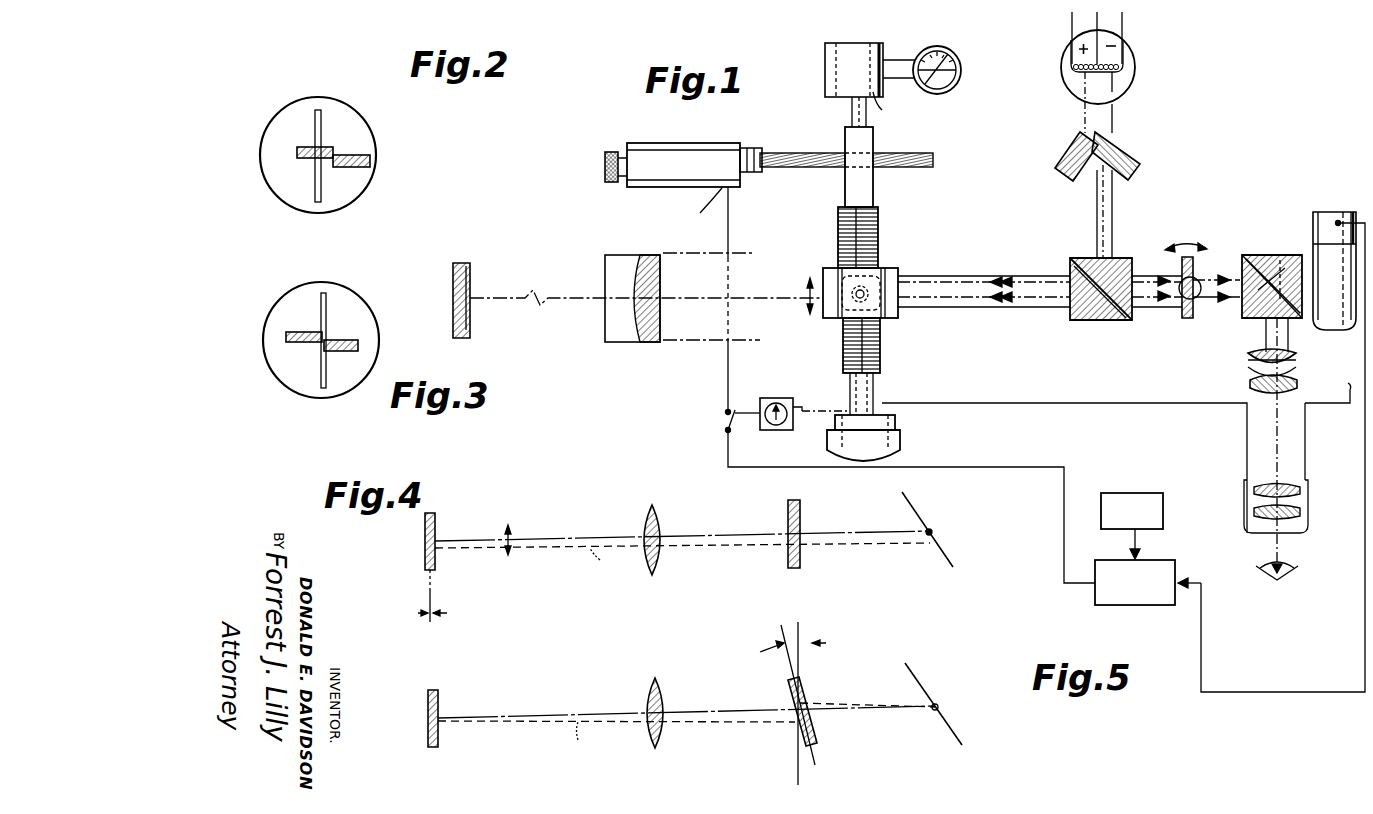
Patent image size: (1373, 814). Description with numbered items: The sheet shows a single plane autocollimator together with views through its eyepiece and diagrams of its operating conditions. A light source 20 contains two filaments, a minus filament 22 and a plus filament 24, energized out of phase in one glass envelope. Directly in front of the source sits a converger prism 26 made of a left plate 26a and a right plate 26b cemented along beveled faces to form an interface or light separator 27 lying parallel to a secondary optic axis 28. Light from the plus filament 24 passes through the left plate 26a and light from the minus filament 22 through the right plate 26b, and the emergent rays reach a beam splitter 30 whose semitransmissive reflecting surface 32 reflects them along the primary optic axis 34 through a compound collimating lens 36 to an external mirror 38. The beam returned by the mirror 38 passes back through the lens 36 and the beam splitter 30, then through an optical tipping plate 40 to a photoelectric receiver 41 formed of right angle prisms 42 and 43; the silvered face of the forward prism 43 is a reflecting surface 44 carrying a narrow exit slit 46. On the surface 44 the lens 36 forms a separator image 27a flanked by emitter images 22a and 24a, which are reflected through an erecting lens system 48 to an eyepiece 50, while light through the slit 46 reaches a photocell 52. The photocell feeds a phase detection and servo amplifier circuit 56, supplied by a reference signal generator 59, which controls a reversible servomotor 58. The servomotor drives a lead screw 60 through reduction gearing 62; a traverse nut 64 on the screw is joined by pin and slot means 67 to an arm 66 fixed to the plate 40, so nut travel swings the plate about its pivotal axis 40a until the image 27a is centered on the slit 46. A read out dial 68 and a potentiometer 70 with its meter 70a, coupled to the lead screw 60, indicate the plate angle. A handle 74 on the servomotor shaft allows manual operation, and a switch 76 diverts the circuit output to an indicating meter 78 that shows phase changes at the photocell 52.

In FIG. 1, the light source 20 is at (1136, 68).
In FIG. 1, the minus filament 22 is at (1124, 46).
In FIG. 1, the plus filament 24 is at (1068, 50).
In FIG. 1, the converger prism 26 is at (1111, 156).
In FIG. 1, the left plate 26a is at (1068, 160).
In FIG. 1, the right plate 26b is at (1140, 168).
In FIG. 1, the interface or light separator 27 is at (1080, 133).
In FIG. 2, the separator image 27a is at (330, 148).
In FIG. 3, the separator image 27a is at (332, 333).
In FIG. 4, the separator image 27a is at (940, 545).
In FIG. 5, the separator image 27a is at (938, 707).
In FIG. 1, the secondary optic axis 28 is at (1108, 212).
In FIG. 1, the beam splitter 30 is at (1108, 322).
In FIG. 1, the semitransmissive reflecting surface 32 is at (1075, 318).
In FIG. 1, the primary optic axis 34 is at (800, 300).
In FIG. 4, the primary optic axis 34 is at (590, 540).
In FIG. 5, the primary optic axis 34 is at (593, 715).
In FIG. 1, the compound collimating lens 36 is at (665, 342).
In FIG. 4, the compound collimating lens 36 is at (660, 512).
In FIG. 5, the compound collimating lens 36 is at (668, 730).
In FIG. 1, the mirror 38 is at (472, 275).
In FIG. 4, the mirror 38 is at (437, 518).
In FIG. 5, the mirror 38 is at (440, 692).
In FIG. 1, the optical tipping plate 40 is at (1185, 322).
In FIG. 4, the optical tipping plate 40 is at (801, 510).
In FIG. 5, the optical tipping plate 40 is at (818, 735).
In FIG. 1, the pivotal axis 40a is at (1190, 283).
In FIG. 1, the photoelectric receiver 41 is at (1279, 224).
In FIG. 1, the right angle prism 42 is at (1295, 247).
In FIG. 1, the forward right angle prism 43 is at (1262, 295).
In FIG. 1, the reflecting surface 44 is at (1290, 312).
In FIG. 2, the reflecting surface 44 is at (350, 190).
In FIG. 3, the reflecting surface 44 is at (362, 358).
In FIG. 4, the reflecting surface 44 is at (920, 518).
In FIG. 5, the reflecting surface 44 is at (920, 683).
In FIG. 1, the exit slit 46 is at (1280, 258).
In FIG. 2, the exit slit 46 is at (321, 115).
In FIG. 3, the exit slit 46 is at (326, 300).
In FIG. 4, the exit slit 46 is at (932, 531).
In FIG. 1, the erecting lens system 48 is at (1246, 375).
In FIG. 1, the eyepiece 50 is at (1241, 510).
In FIG. 1, the photocell 52 is at (1340, 210).
In FIG. 1, the phase detection and servo amplifier circuit 56 is at (1135, 606).
In FIG. 1, the reversible servomotor 58 is at (718, 143).
In FIG. 1, the reference signal generator 59 is at (1135, 493).
In FIG. 1, the lead screw 60 is at (885, 345).
In FIG. 1, the reduction gearing 62 is at (802, 152).
In FIG. 1, the traverse nut 64 is at (898, 315).
In FIG. 1, the arm 66 is at (983, 275).
In FIG. 1, the pin and slot means 67 is at (850, 282).
In FIG. 1, the read out dial 68 is at (900, 436).
In FIG. 1, the potentiometer 70 is at (885, 42).
In FIG. 1, the meter 70a is at (962, 70).
In FIG. 1, the handle 74 is at (612, 150).
In FIG. 1, the switch 76 is at (726, 418).
In FIG. 1, the indicating meter 78 is at (784, 398).
In FIG. 2, the minus emitter image 22a is at (296, 148).
In FIG. 3, the minus emitter image 22a is at (290, 335).
In FIG. 2, the plus emitter image 24a is at (365, 156).
In FIG. 3, the plus emitter image 24a is at (345, 341).